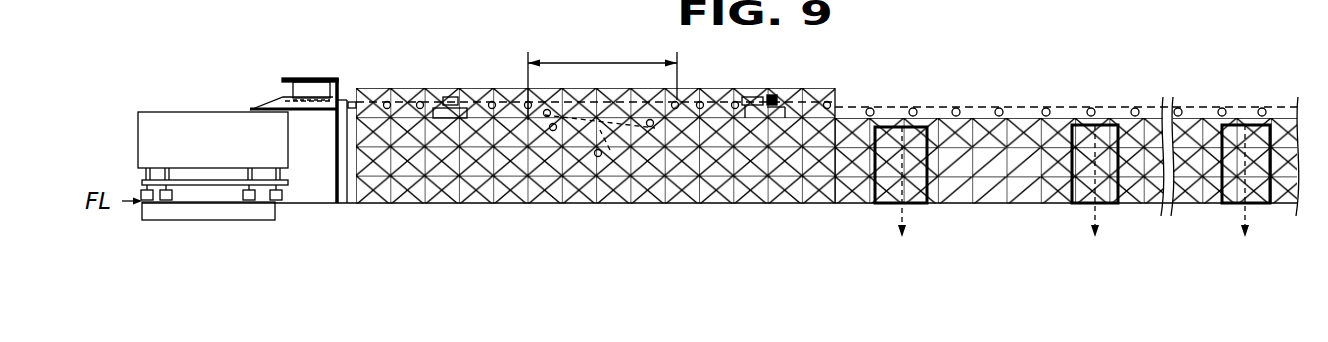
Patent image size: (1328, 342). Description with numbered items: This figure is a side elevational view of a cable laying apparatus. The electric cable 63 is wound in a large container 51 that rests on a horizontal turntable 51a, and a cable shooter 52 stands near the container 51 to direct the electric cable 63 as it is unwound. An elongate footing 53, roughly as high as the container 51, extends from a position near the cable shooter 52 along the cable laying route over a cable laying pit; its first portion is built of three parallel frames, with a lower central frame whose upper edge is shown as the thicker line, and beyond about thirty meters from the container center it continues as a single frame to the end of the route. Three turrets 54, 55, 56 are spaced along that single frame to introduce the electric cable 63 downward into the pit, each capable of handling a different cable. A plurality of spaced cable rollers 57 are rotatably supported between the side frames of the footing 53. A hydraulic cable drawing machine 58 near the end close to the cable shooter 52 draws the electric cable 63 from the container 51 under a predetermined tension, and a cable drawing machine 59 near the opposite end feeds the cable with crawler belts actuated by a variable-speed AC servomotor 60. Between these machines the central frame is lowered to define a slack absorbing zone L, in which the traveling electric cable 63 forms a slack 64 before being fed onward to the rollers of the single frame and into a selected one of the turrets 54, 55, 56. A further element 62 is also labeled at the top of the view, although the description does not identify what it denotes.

The container 51 is at (183, 112).
The horizontal turntable 51a is at (141, 177).
The cable shooter 52 is at (314, 79).
The footing 53 is at (838, 88).
The turret 54 is at (917, 127).
The turret 55 is at (1105, 128).
The turret 56 is at (1252, 128).
The cable roller 57 is at (598, 158).
The hydraulic cable drawing machine 58 is at (450, 96).
The cable drawing machine 59 is at (746, 97).
The variable-speed AC servomotor 60 is at (777, 93).
The drive unit 62 is at (572, 4).
The electric cable 63 is at (1013, 107).
The slack 64 is at (615, 153).
The slack absorbing zone L is at (602, 76).